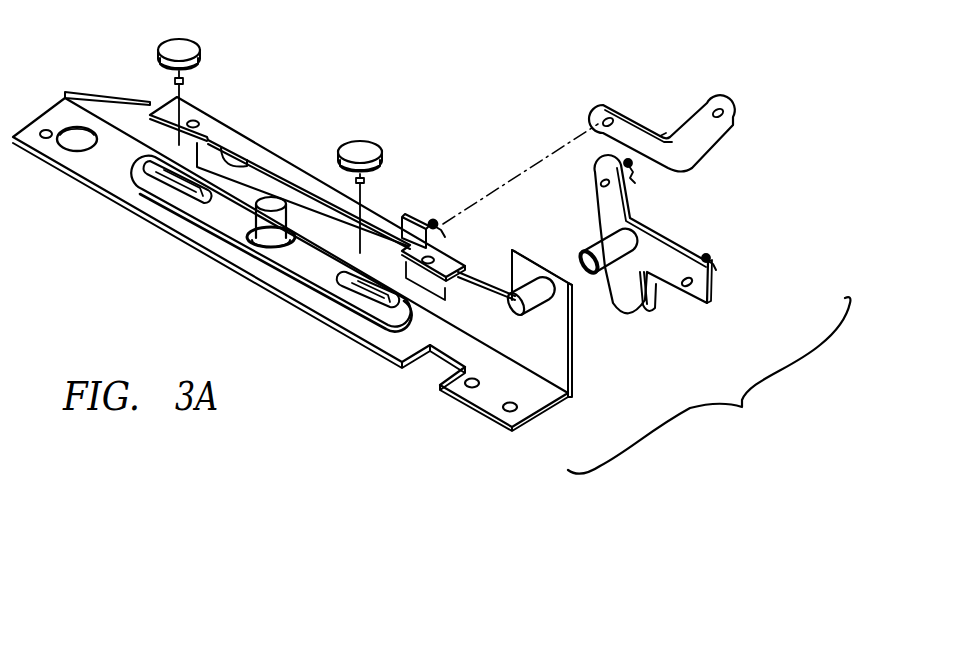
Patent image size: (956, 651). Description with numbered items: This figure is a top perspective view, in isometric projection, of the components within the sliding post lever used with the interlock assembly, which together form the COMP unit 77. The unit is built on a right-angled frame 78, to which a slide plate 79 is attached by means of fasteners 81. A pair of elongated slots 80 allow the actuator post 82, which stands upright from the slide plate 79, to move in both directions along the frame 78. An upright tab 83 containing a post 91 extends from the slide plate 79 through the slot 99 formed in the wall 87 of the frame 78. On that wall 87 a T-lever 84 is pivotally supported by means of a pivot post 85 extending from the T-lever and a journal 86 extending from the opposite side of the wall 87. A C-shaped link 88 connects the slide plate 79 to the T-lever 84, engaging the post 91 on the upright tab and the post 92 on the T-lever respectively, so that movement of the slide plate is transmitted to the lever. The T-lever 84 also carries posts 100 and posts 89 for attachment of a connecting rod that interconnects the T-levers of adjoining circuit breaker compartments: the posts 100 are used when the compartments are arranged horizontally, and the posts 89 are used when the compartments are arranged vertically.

The COMP unit 77 is at (778, 446).
The right-angled frame 78 is at (478, 406).
The slide plate 79 is at (212, 224).
The elongated slots 80 is at (384, 312).
The fasteners 81 is at (368, 150).
The actuator post 82 is at (268, 198).
The upright tab 83 is at (405, 217).
The T-lever 84 is at (683, 306).
The pivot post 85 is at (581, 244).
The journal 86 is at (540, 308).
The wall 87 is at (492, 324).
The C-shaped link 88 is at (640, 128).
The posts 89 is at (714, 258).
The post 91 is at (440, 229).
The post 92 is at (637, 180).
The slot 99 is at (221, 148).
The posts 100 is at (655, 290).